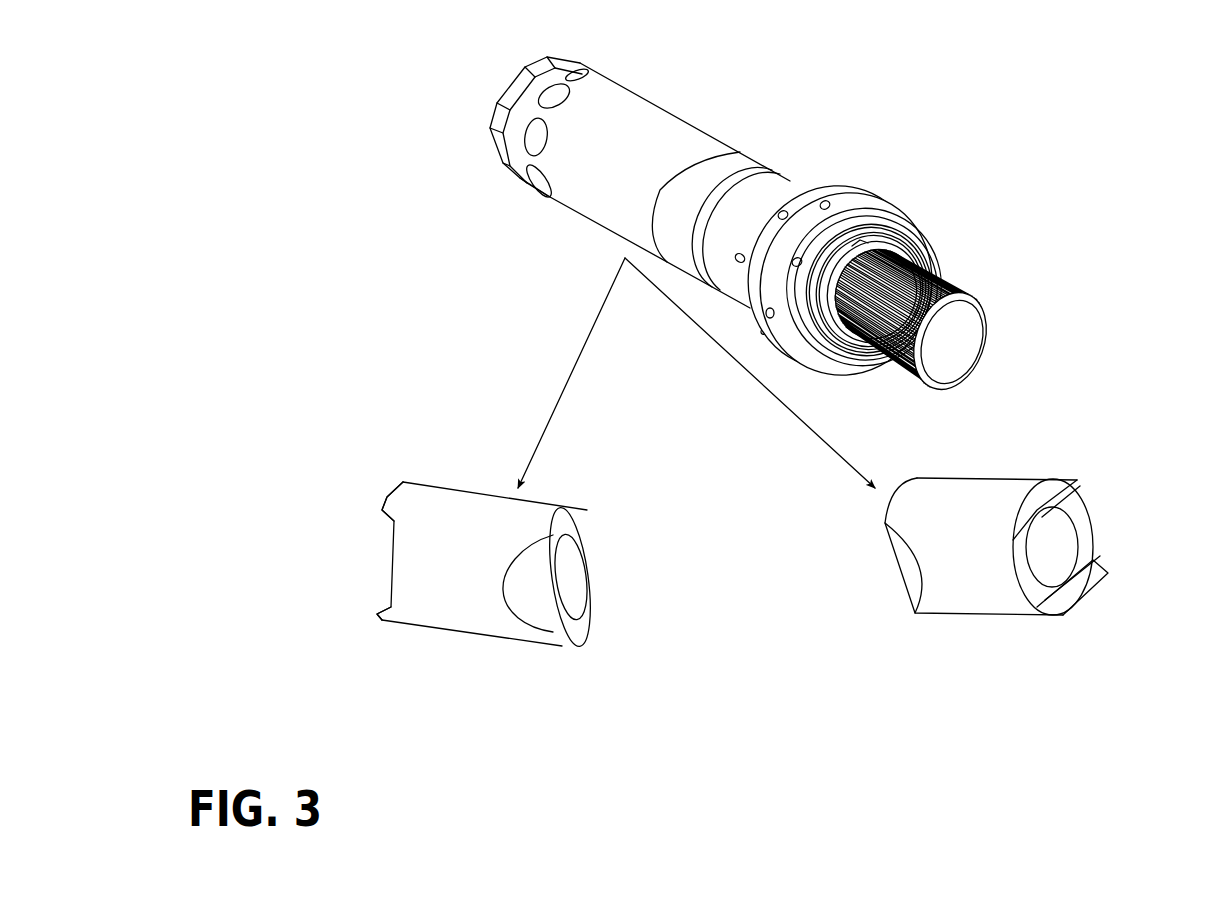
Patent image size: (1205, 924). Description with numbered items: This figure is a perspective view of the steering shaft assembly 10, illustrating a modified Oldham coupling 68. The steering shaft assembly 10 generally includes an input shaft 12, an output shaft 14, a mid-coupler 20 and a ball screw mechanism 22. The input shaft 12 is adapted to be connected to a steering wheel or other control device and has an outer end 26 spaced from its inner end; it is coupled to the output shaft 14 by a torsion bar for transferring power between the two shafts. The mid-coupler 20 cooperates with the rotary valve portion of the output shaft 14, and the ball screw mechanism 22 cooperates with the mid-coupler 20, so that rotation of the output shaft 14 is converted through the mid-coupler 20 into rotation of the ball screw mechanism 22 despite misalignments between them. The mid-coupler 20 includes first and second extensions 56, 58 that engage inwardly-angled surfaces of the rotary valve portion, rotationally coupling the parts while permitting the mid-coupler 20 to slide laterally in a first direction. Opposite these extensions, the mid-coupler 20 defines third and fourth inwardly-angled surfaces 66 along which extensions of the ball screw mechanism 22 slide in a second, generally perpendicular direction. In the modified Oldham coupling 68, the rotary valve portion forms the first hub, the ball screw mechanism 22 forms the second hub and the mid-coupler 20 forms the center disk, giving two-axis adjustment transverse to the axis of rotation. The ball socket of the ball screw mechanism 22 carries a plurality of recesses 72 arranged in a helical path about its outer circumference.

The steering shaft assembly 10 is at (1020, 182).
The input shaft 12 is at (970, 280).
The output shaft 14 is at (860, 180).
The mid-coupler 20 is at (700, 120).
The ball screw mechanism 22 is at (613, 73).
The outer end 26 is at (960, 340).
The first extension 56 is at (383, 614).
The second extension 58 is at (382, 520).
The third and fourth inwardly-angled surfaces 66 is at (532, 600).
The modified Oldham coupling 68 is at (912, 567).
The recesses 72 is at (535, 137).